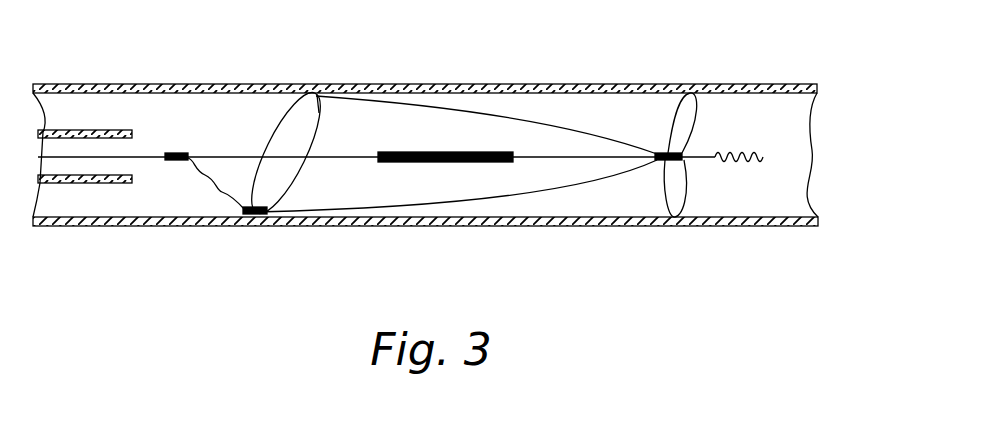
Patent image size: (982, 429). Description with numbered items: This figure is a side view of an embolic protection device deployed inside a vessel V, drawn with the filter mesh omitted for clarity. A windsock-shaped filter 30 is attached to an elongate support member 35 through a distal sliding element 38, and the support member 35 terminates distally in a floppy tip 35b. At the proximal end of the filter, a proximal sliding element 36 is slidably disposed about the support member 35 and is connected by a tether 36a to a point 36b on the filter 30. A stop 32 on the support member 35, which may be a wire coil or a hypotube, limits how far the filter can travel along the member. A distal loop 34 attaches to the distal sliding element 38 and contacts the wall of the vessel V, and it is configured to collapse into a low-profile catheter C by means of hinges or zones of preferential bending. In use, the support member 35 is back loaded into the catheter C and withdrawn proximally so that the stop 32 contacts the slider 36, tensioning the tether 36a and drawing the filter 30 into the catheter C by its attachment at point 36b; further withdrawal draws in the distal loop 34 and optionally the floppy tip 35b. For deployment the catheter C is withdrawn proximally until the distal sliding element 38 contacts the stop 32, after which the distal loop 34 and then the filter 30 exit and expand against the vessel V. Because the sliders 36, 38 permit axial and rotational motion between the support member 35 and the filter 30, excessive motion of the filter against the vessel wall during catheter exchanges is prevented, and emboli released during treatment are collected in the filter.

The catheter C is at (93, 128).
The vessel V is at (150, 84).
The windsock-shaped filter 30 is at (534, 111).
The stop 32 is at (483, 163).
The distal loop 34 is at (701, 111).
The elongate support member 35 is at (158, 152).
The floppy tip 35b is at (763, 157).
The proximal sliding element 36 is at (176, 153).
The tether 36a is at (222, 193).
The point on the filter 36b is at (248, 215).
The distal sliding element 38 is at (663, 172).